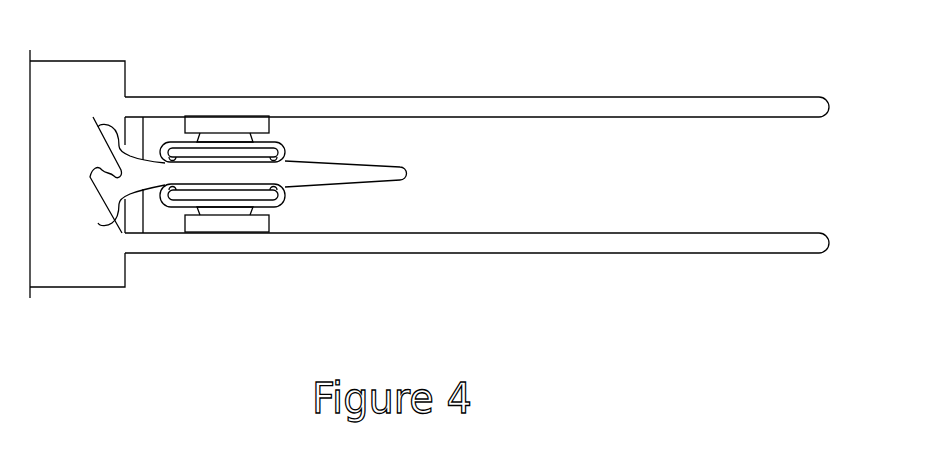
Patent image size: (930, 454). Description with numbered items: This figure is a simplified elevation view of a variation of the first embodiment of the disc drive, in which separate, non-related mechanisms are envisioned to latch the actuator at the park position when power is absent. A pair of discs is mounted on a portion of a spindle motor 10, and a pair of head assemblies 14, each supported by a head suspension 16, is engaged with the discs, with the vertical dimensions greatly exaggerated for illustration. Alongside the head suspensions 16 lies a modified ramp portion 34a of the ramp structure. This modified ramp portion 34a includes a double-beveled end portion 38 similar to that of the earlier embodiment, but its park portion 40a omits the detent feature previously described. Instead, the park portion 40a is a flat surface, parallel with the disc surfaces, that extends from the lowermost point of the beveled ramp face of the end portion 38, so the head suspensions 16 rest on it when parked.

The spindle motor 10 is at (85, 85).
The head assembly 14 is at (228, 121).
The head suspension 16 is at (285, 147).
The double-beveled end portion 38 is at (378, 185).
The modified ramp portion 34a is at (278, 177).
The park portion 40a is at (288, 257).